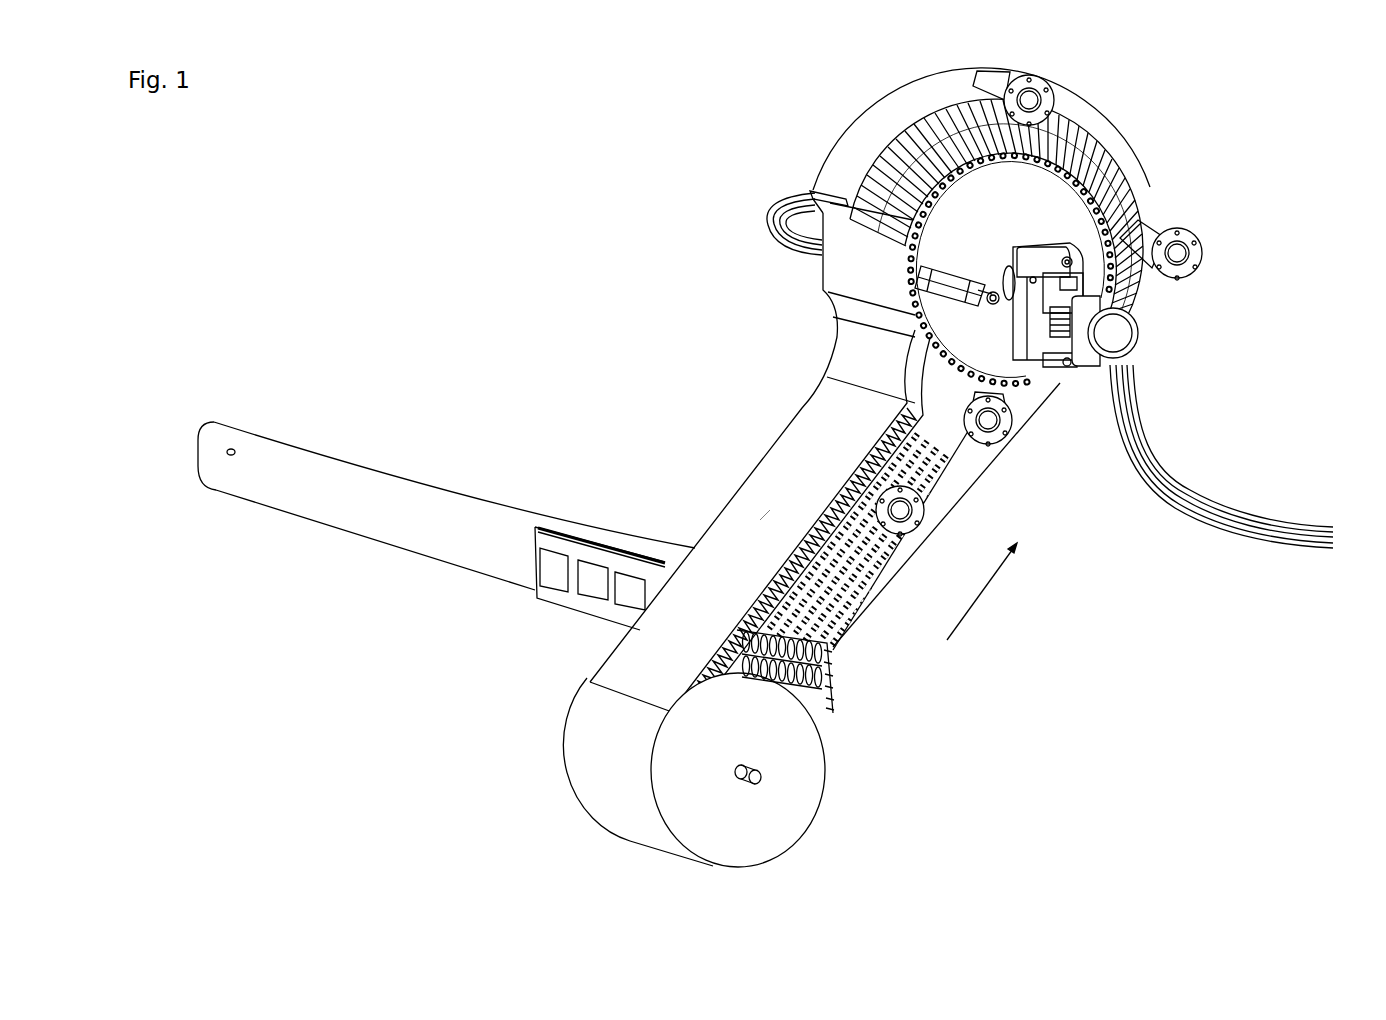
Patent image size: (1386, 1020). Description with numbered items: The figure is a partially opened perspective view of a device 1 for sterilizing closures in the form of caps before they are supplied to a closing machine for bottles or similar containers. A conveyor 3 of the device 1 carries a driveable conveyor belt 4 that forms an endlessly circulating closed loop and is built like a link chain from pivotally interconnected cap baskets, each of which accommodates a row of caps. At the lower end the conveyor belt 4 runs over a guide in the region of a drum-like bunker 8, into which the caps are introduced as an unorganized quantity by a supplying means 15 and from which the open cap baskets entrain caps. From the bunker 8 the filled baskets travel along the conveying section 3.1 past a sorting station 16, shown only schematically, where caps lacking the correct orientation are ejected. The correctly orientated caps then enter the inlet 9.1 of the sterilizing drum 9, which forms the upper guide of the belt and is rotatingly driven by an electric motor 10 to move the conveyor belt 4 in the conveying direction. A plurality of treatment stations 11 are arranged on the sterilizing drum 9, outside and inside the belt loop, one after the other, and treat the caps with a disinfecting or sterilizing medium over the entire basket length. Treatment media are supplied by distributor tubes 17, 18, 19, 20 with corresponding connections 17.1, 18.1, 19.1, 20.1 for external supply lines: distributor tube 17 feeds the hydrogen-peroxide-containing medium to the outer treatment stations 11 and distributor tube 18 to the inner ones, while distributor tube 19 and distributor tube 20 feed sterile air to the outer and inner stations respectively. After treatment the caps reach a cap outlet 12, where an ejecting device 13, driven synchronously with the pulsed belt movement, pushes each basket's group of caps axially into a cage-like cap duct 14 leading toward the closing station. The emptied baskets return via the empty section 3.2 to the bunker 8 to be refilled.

The device 1 is at (556, 265).
The conveyor 3 is at (760, 464).
The conveying section 3.1 is at (875, 642).
The empty section 3.2 is at (730, 468).
The conveyor belt 4 is at (855, 610).
The bunker 8 is at (797, 780).
The sterilizing drum 9 is at (1010, 378).
The inlet 9.1 is at (1057, 403).
The electric motor 10 is at (1120, 343).
The treatment stations 11 is at (1110, 183).
The cap outlet 12 is at (797, 272).
The ejecting device 13 is at (1100, 147).
The cage-like cap duct 14 is at (780, 187).
The supplying means 15 is at (587, 537).
The sorting station 16 is at (890, 610).
The distributor tube 17 is at (1185, 230).
The connection 17.1 is at (1201, 251).
The distributor tube 18 is at (910, 423).
The connection 18.1 is at (963, 400).
The distributor tube 19 is at (987, 83).
The connection 19.1 is at (1052, 80).
The distributor tube 20 is at (887, 465).
The connection 20.1 is at (926, 516).